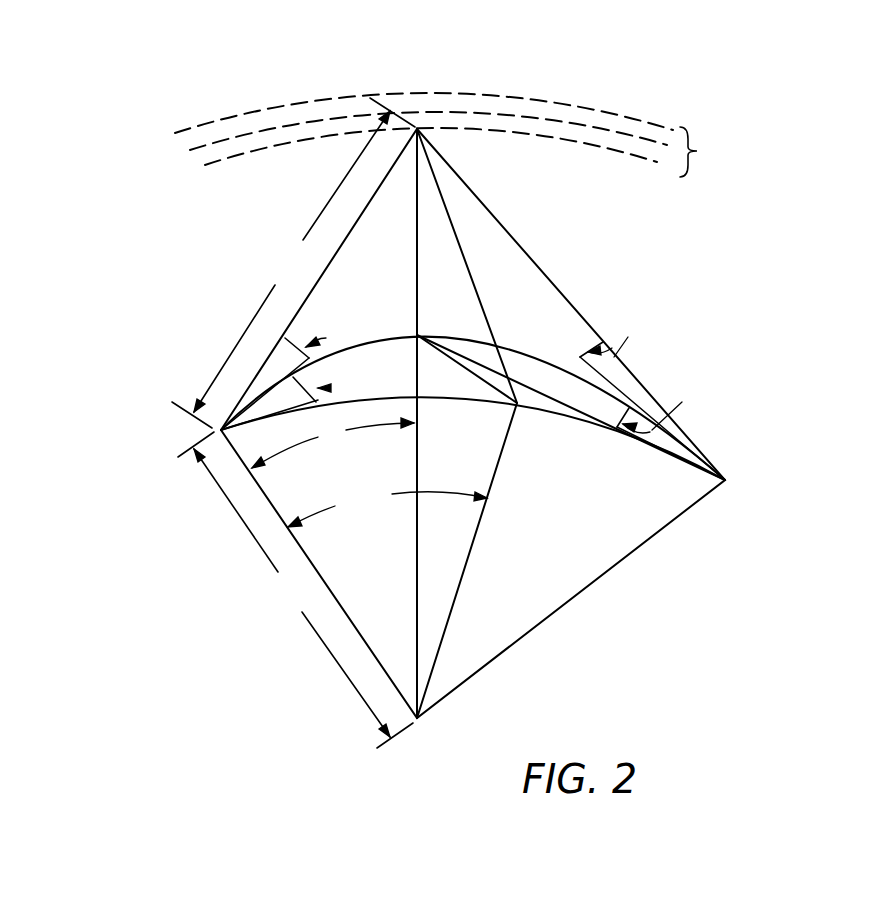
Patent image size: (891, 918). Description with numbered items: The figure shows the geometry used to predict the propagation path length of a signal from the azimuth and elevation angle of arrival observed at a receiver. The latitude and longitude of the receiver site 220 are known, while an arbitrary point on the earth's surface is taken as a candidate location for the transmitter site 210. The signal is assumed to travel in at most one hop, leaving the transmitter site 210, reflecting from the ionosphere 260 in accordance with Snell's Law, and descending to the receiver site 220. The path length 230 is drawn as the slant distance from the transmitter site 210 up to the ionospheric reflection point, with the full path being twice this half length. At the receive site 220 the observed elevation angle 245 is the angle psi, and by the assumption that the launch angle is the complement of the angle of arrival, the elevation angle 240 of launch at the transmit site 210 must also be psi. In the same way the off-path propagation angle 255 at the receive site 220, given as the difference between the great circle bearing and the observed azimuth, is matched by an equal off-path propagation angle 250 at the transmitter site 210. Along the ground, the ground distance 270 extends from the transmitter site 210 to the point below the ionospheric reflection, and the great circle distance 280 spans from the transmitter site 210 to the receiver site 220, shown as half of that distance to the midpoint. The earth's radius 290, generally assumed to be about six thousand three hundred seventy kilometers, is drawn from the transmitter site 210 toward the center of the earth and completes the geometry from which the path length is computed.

The transmitter site 210 is at (173, 507).
The receiver site 220 is at (792, 524).
The path length 230 is at (262, 258).
The elevation angle of launch 240 is at (344, 332).
The observed elevation angle 245 is at (636, 310).
The off-path propagation angle at transmit site 250 is at (398, 367).
The off-path propagation angle at receive site 255 is at (711, 390).
The ionosphere 260 is at (790, 168).
The ground distance 270 is at (333, 448).
The great circle distance 280 is at (382, 509).
The earth's radius 290 is at (290, 612).